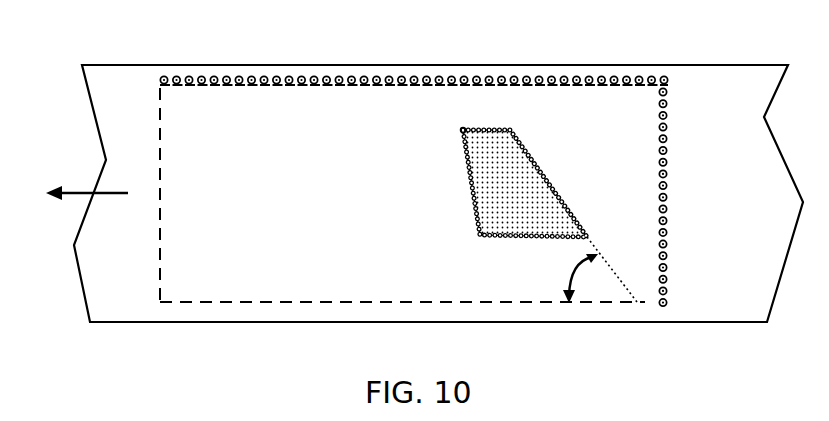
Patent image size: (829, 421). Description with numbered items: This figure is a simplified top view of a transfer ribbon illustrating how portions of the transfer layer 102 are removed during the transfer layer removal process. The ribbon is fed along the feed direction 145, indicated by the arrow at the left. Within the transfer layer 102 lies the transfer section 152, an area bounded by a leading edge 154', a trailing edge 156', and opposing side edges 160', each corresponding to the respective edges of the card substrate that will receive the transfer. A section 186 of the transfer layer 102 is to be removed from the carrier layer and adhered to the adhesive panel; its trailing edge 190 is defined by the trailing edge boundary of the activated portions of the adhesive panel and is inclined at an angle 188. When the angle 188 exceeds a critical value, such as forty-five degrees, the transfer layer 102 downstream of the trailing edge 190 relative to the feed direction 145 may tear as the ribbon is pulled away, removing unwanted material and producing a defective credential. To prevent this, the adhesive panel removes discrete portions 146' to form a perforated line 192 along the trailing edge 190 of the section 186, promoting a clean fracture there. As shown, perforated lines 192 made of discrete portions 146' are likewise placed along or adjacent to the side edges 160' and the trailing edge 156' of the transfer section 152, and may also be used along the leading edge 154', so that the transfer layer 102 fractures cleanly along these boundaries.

The transfer layer 102 is at (518, 292).
The feed direction 145 is at (77, 193).
The discrete portions 146' is at (414, 102).
The transfer section 152 is at (337, 195).
The leading edge 154' is at (95, 195).
The trailing edge 156' is at (625, 197).
The side edges 160' is at (402, 231).
The section 186 is at (466, 132).
The angle 188 is at (574, 266).
The trailing edge 190 is at (561, 199).
The perforated line 192 is at (480, 80).